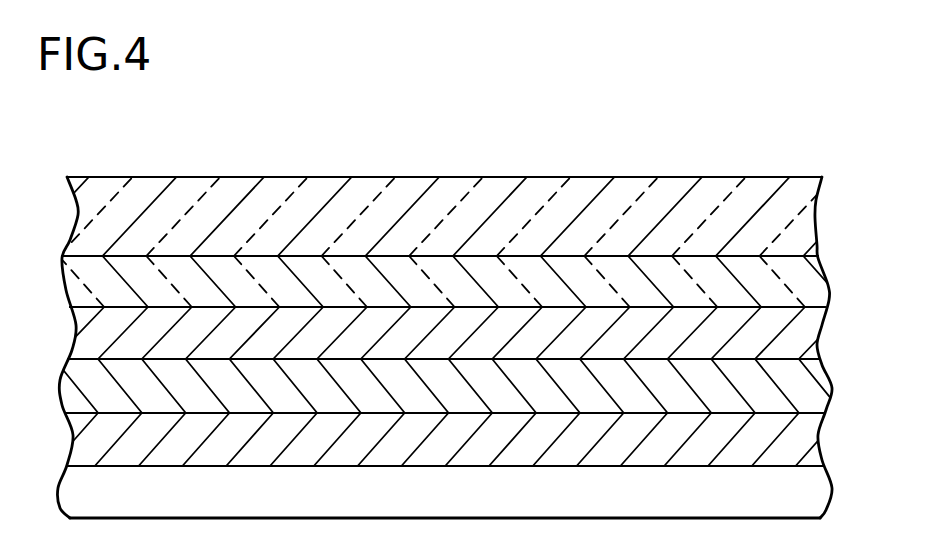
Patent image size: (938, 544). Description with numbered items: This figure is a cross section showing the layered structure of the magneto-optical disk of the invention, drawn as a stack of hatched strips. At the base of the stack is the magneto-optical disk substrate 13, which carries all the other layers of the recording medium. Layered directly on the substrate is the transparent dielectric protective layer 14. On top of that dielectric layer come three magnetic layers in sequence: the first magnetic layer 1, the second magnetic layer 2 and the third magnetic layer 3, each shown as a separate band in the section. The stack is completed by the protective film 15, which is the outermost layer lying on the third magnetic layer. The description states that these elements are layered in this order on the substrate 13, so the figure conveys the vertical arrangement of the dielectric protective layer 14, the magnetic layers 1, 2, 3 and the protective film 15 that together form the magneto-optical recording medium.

The magneto-optical disk substrate 13 is at (820, 218).
The transparent dielectric protective layer 14 is at (829, 284).
The first magnetic layer 1 is at (818, 333).
The second magnetic layer 2 is at (831, 388).
The third magnetic layer 3 is at (819, 440).
The protective film 15 is at (832, 492).